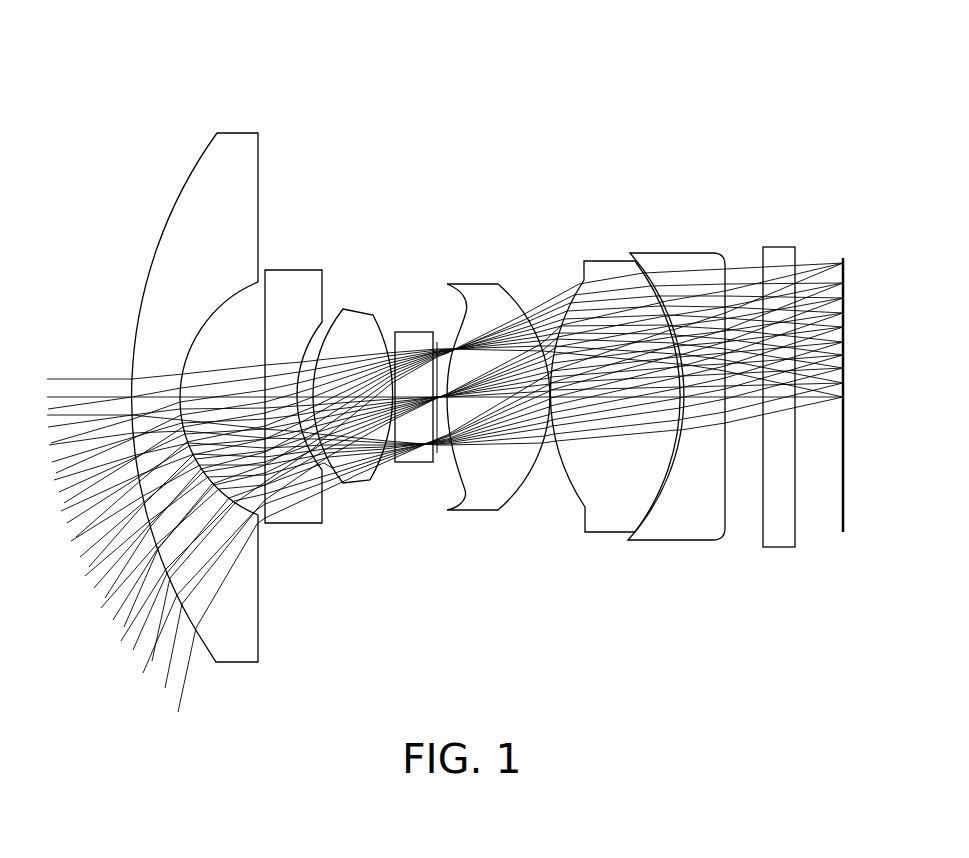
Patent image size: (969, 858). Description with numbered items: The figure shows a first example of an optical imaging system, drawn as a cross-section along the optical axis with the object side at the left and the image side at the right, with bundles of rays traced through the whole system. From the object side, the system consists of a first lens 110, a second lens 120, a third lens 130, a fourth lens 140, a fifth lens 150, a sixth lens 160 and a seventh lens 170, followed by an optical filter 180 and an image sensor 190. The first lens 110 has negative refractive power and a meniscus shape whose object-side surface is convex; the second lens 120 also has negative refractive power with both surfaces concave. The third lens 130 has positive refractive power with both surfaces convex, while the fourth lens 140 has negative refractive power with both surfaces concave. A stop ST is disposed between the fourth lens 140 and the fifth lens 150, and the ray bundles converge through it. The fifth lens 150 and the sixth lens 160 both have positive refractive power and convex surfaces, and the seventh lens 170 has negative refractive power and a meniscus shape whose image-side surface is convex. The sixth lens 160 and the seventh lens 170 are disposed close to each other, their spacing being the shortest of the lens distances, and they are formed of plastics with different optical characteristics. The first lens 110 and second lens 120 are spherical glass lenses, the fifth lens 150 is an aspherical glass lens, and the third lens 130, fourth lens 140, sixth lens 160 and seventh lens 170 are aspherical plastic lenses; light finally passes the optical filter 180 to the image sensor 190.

The first lens 110 is at (203, 163).
The second lens 120 is at (297, 279).
The third lens 130 is at (362, 323).
The fourth lens 140 is at (417, 333).
The fifth lens 150 is at (483, 291).
The sixth lens 160 is at (606, 267).
The seventh lens 170 is at (681, 258).
The optical filter 180 is at (779, 255).
The image sensor 190 is at (843, 260).
The stop ST is at (437, 453).